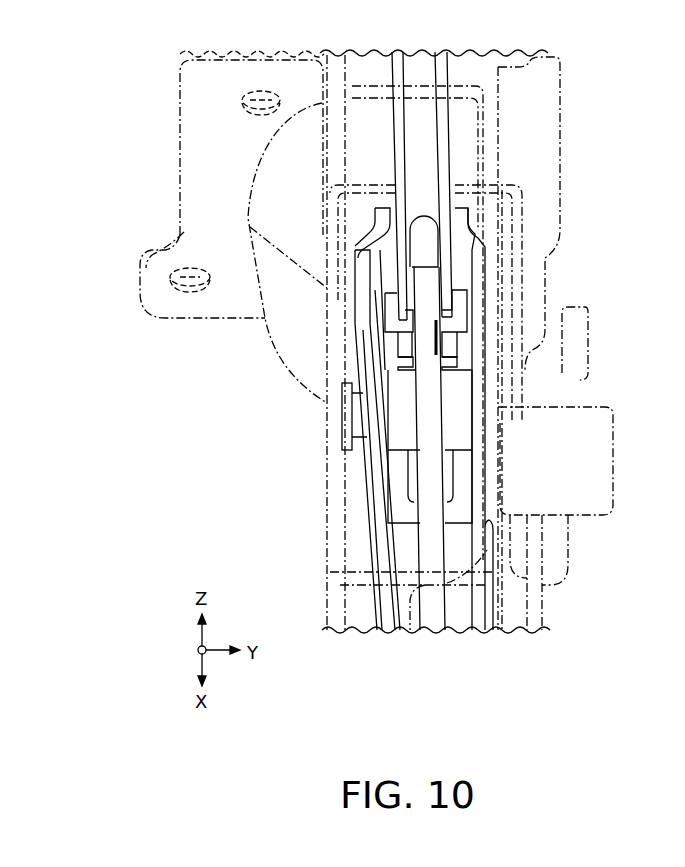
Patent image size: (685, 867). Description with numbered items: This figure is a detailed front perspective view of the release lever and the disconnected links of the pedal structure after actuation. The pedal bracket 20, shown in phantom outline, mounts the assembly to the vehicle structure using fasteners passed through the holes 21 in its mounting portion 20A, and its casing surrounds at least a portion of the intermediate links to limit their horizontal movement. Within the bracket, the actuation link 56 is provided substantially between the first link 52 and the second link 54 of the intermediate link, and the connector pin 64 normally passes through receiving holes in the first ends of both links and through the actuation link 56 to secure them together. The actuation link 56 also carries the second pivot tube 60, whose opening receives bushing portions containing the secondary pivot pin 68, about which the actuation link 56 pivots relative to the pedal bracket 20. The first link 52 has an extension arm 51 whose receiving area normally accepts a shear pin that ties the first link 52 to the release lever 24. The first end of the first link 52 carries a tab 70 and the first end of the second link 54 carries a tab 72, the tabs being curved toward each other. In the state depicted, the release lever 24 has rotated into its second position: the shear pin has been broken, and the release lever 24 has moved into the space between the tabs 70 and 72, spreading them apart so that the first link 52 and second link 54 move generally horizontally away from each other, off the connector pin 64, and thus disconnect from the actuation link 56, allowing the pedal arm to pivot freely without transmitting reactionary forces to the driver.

The pedal bracket 20 is at (300, 350).
The mounting portion 20A is at (203, 145).
The holes 21 is at (258, 90).
The release lever 24 is at (448, 65).
The extension arm 51 is at (360, 267).
The first link 52 is at (370, 347).
The second link 54 is at (480, 407).
The actuation link 56 is at (432, 323).
The second pivot tube 60 is at (360, 478).
The connector pin 64 is at (458, 300).
The secondary pivot pin 68 is at (342, 435).
The tab 70 is at (385, 227).
The tab 72 is at (463, 222).